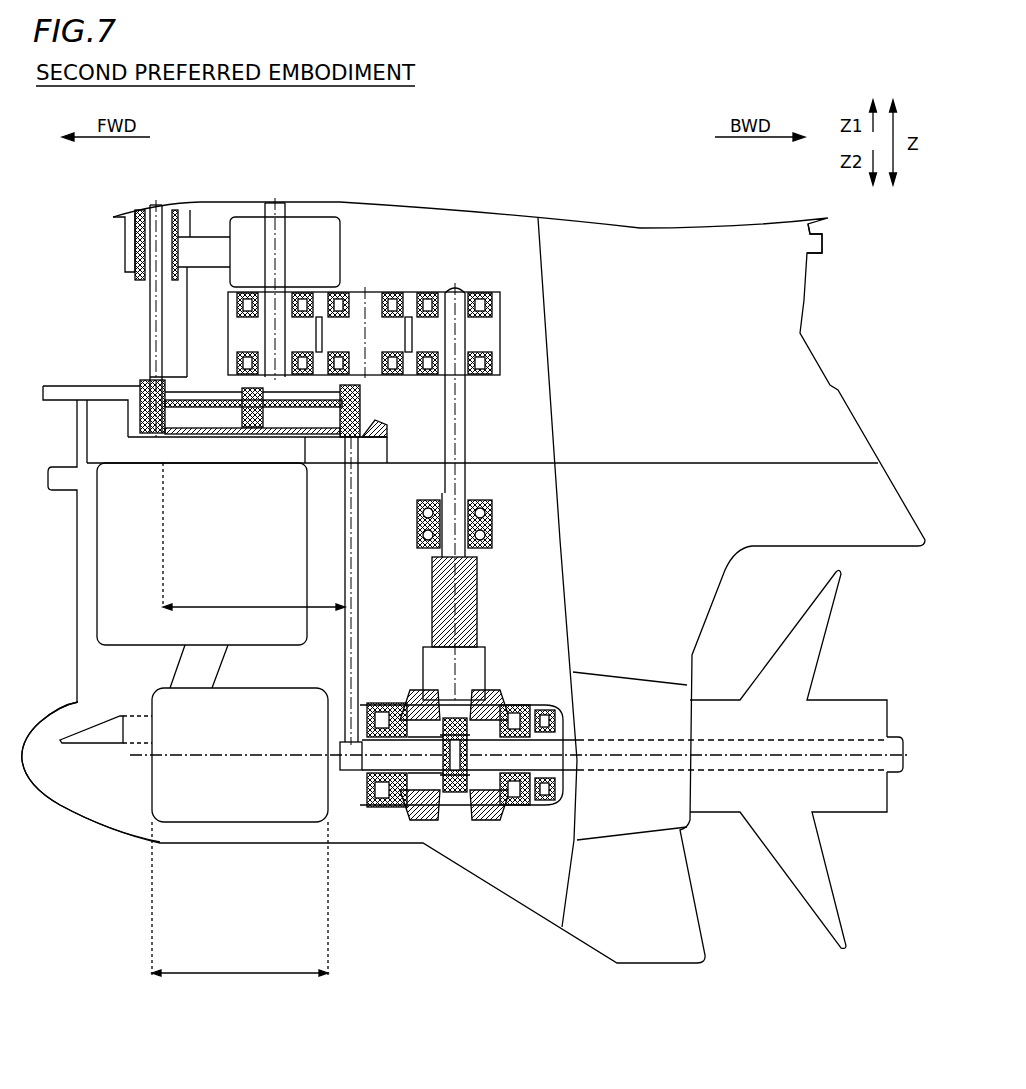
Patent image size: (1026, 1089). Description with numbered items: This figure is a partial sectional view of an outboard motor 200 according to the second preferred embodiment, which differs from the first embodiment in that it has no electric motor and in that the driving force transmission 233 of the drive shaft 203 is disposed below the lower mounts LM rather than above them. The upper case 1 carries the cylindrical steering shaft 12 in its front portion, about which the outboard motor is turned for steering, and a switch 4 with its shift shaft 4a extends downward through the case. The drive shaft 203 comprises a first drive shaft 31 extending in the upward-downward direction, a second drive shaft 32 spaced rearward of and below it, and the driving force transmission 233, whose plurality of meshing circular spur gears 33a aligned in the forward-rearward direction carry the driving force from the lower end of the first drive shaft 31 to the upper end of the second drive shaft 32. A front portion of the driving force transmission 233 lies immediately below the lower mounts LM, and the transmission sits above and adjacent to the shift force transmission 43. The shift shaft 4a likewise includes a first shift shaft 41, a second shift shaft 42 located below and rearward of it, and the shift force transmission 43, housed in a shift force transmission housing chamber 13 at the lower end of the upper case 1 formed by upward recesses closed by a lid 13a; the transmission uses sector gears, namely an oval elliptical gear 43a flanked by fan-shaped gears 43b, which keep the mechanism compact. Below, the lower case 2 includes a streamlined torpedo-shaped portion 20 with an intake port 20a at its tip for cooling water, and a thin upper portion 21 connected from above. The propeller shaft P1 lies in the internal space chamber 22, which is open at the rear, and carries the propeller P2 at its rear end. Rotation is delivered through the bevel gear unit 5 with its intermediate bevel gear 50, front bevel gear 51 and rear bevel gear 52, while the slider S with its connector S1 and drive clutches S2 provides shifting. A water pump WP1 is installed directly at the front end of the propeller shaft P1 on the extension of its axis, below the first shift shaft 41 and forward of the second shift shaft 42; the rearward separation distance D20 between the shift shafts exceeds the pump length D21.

The upper case 1 is at (817, 305).
The outboard motor 200 is at (842, 232).
The lower case 2 is at (730, 580).
The propeller shaft P1 is at (668, 778).
The propeller P2 is at (852, 810).
The internal space chamber 22 is at (470, 820).
The upper portion 21 is at (78, 607).
The torpedo-shaped portion 20 is at (38, 737).
The intake port 20a is at (68, 732).
The water pump WP1 is at (185, 805).
The length of the water pump D21 is at (240, 899).
The rearward separation distance D20 is at (254, 536).
The steering shaft 12 is at (126, 260).
The first shift shaft 41 is at (140, 230).
The switch 4 is at (152, 194).
The shift shaft 4a is at (164, 203).
The lower mounts LM is at (328, 238).
The drive shaft 203 is at (279, 193).
The first drive shaft 31 is at (290, 207).
The driving force transmission 233 is at (514, 312).
The spur gear 33a is at (472, 290).
The second drive shaft 32 is at (460, 420).
The shift force transmission 43 is at (140, 385).
The shift force transmission housing chamber 13 is at (178, 395).
The lid 13a is at (217, 432).
The elliptical gear 43a is at (258, 410).
The fan-shaped gear 43b is at (318, 405).
The second shift shaft 42 is at (360, 560).
The bevel gear unit 5 is at (485, 690).
The slider S is at (457, 815).
The connector S1 is at (445, 820).
The drive clutch S2 is at (428, 825).
The front bevel gear 51 is at (405, 822).
The intermediate bevel gear 50 is at (490, 700).
The rear bevel gear 52 is at (497, 820).